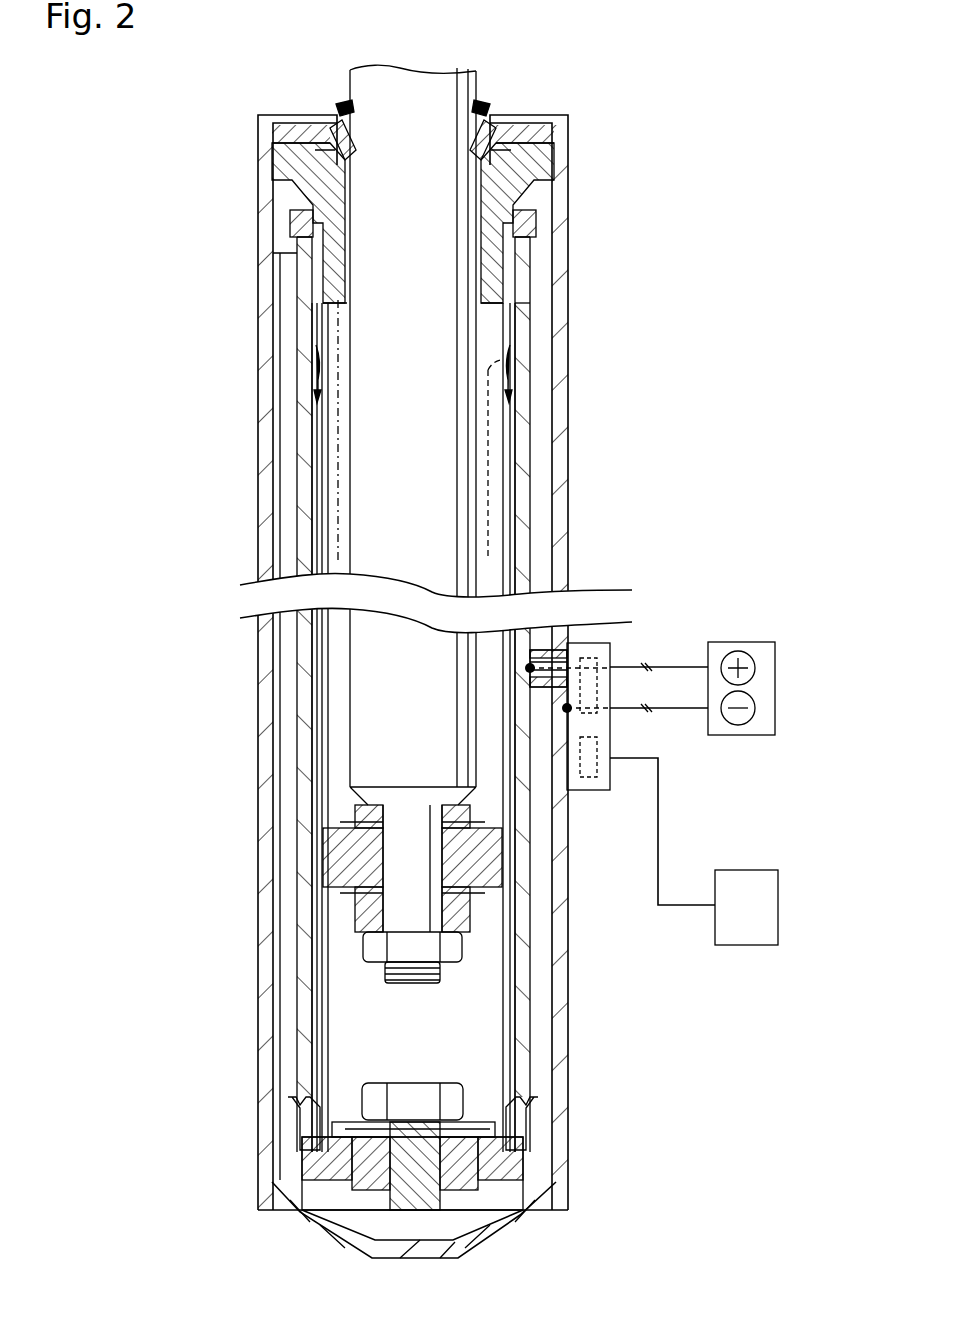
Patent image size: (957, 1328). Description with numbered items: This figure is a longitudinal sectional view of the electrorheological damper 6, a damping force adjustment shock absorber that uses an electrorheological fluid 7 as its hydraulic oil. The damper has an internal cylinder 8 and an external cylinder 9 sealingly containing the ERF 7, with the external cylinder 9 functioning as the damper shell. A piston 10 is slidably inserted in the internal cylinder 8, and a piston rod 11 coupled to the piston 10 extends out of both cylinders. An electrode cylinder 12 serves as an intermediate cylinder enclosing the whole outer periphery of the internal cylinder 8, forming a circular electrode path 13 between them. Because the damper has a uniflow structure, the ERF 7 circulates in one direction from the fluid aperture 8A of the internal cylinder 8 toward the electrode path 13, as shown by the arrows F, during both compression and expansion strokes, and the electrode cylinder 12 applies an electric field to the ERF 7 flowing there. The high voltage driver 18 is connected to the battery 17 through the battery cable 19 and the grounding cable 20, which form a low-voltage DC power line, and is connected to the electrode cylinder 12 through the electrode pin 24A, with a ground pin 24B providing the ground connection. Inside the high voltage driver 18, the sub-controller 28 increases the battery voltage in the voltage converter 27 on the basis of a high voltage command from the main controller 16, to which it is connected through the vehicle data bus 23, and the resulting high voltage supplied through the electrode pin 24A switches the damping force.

The electrorheological damper 6 is at (440, 661).
The electrorheological fluid 7 is at (455, 1022).
The internal cylinder 8 is at (315, 522).
The fluid aperture 8A is at (316, 352).
The external cylinder 9 is at (560, 500).
The piston 10 is at (322, 838).
The piston rod 11 is at (387, 273).
The electrode cylinder 12 is at (523, 837).
The electrode path 13 is at (517, 953).
The main controller 16 is at (741, 946).
The battery 17 is at (758, 642).
The high voltage driver 18 is at (610, 772).
The battery cable 19 is at (700, 666).
The grounding cable 20 is at (685, 712).
The vehicle data bus 23 is at (658, 838).
The electrode pin 24A is at (568, 662).
The ground pin 24B is at (568, 710).
The voltage converter 27 is at (597, 687).
The sub-controller 28 is at (590, 782).
The arrows indicating ERF flow direction F is at (343, 418).